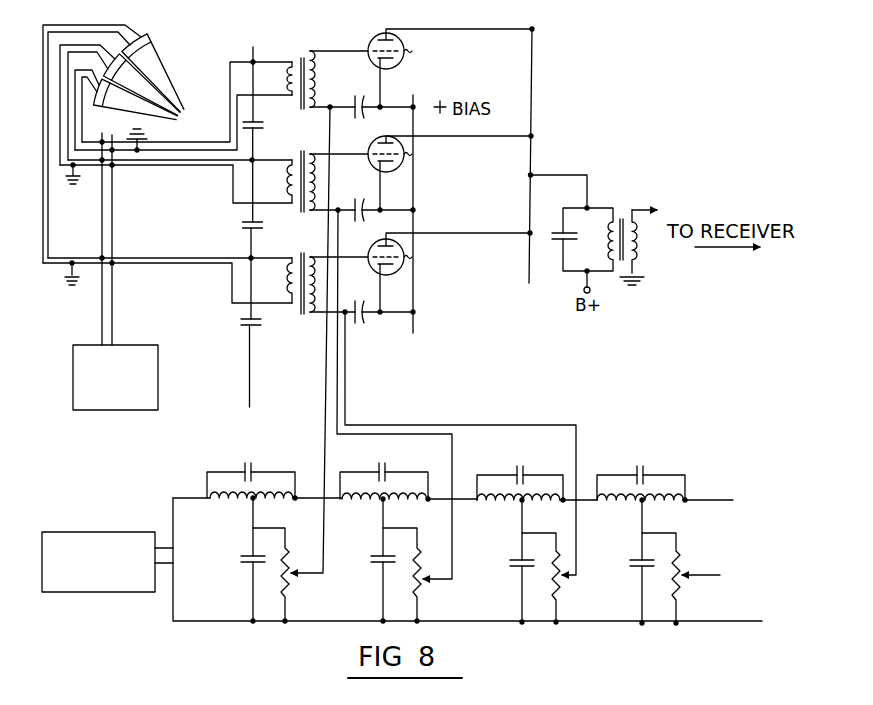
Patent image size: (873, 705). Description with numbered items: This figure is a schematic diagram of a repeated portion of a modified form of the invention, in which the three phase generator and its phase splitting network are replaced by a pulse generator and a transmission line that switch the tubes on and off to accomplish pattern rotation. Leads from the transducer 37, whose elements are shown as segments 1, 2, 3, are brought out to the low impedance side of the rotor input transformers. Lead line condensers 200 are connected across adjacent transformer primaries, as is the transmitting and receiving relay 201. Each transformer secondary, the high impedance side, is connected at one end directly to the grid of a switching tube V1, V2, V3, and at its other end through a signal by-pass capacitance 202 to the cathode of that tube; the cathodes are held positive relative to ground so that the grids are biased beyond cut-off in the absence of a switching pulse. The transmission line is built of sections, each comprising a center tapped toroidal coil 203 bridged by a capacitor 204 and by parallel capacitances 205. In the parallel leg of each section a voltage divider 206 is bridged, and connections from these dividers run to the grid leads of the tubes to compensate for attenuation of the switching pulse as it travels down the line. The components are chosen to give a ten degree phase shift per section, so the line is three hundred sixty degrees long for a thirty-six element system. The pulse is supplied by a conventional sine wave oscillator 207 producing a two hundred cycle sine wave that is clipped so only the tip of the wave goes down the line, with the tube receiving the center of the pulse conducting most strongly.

The transducer 37 is at (153, 72).
The sector segment 1 is at (136, 99).
The sector segment 2 is at (142, 85).
The sector segment 3 is at (153, 73).
The lead line condenser 200 is at (256, 127).
The transmitting and receiving relay 201 is at (158, 378).
The signal by-pass capacitance 202 is at (363, 109).
The center tapped toroidal coil 203 is at (237, 505).
The capacitor 204 is at (257, 463).
The parallel capacitance 205 is at (247, 563).
The voltage divider 206 is at (288, 589).
The sine wave oscillator 207 is at (100, 594).
The vacuum tube V1 is at (421, 68).
The vacuum tube V2 is at (420, 173).
The vacuum tube V3 is at (420, 272).